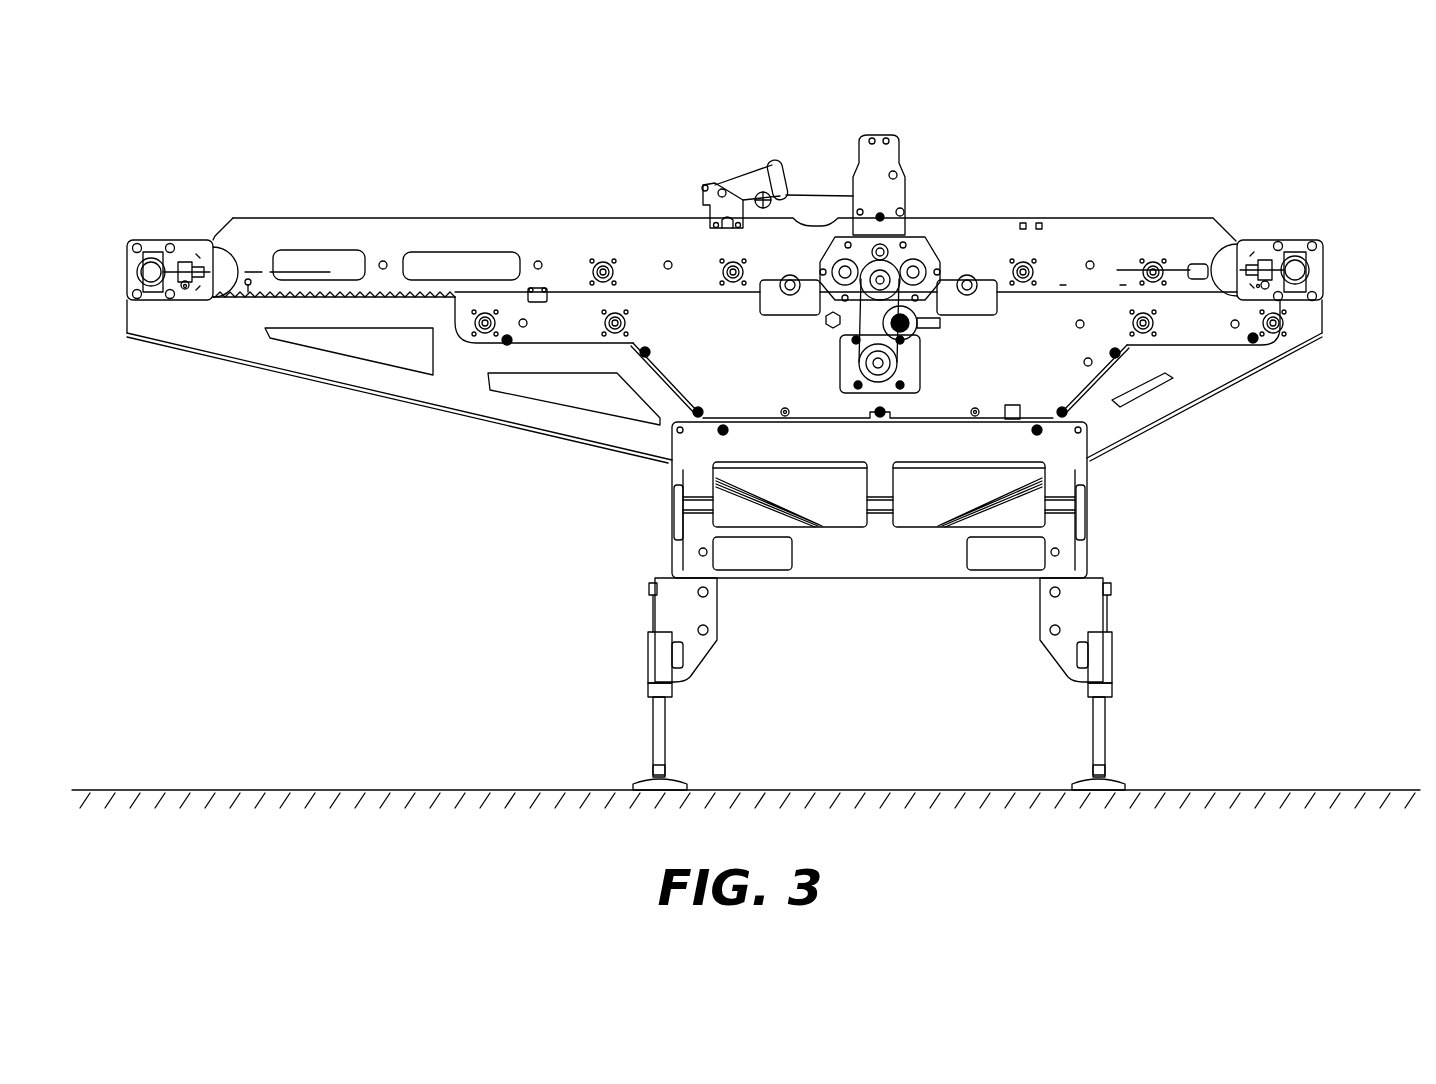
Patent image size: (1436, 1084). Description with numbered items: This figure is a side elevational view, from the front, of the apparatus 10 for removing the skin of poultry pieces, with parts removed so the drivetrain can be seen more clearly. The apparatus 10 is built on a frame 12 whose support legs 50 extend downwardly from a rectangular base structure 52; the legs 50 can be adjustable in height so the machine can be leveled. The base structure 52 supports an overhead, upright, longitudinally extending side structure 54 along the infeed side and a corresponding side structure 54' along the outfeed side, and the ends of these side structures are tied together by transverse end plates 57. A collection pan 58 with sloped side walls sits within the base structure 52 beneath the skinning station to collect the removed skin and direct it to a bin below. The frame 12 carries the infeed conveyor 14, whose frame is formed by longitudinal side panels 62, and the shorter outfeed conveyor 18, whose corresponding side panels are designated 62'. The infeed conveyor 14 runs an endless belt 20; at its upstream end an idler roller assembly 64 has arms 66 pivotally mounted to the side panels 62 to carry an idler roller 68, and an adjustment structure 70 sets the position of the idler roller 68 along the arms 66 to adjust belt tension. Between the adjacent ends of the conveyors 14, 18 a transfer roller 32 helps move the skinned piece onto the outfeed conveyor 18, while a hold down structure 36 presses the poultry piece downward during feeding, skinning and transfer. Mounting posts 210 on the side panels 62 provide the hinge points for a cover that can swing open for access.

The apparatus 10 is at (237, 128).
The frame 12 is at (623, 578).
The infeed conveyor 14 is at (335, 200).
The outfeed conveyor 18 is at (1128, 196).
The endless belt 20 is at (268, 300).
The transfer roller 32 is at (853, 227).
The hold down structure 36 is at (743, 173).
The support legs 50 is at (652, 735).
The base structure 52 is at (1098, 512).
The side structure 54 is at (412, 395).
The side structure 54' is at (1192, 397).
The transverse end plates 57 is at (127, 315).
The collection pan 58 is at (827, 500).
The longitudinal side panels 62 is at (799, 224).
The longitudinal side panels 62' is at (1089, 218).
The idler roller assembly 64 is at (130, 237).
The arms 66 is at (190, 242).
The idler roller 68 is at (150, 272).
The adjustment structure 70 is at (185, 292).
The mounting posts 210 is at (907, 187).